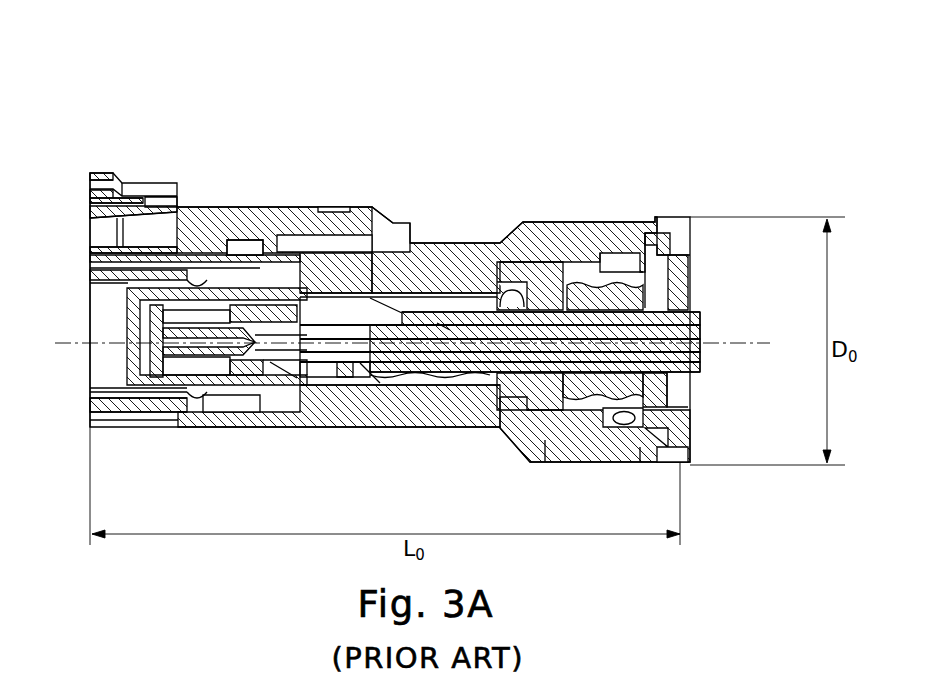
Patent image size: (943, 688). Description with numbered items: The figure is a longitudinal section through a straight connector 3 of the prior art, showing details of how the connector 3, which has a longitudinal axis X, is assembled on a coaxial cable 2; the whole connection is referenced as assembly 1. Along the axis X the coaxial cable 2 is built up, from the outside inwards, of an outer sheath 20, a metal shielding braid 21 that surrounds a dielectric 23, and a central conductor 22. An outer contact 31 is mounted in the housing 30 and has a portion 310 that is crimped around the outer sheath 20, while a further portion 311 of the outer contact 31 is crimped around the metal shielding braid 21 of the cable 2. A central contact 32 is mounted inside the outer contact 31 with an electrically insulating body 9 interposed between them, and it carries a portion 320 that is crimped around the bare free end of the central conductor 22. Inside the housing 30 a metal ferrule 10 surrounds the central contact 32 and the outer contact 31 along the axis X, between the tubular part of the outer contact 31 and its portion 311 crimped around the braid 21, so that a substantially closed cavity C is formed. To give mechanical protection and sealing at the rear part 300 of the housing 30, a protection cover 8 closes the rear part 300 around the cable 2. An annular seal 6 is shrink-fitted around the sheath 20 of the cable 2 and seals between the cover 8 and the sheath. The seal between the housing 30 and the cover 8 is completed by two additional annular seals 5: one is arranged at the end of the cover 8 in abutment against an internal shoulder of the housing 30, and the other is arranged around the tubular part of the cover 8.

The optical connector assembly 1 is at (443, 109).
The coaxial cable 2 is at (558, 367).
The connector 3 is at (203, 135).
The additional annular seals 5 is at (190, 427).
The annular seal 6 is at (582, 262).
The protection cover 8 is at (676, 235).
The electrically insulating body 9 is at (270, 250).
The metal ferrule 10 is at (318, 212).
The outer sheath 20 is at (703, 368).
The metal shielding braid 21 is at (703, 317).
The central conductor 22 is at (703, 346).
The dielectric 23 is at (786, 283).
The housing 30 is at (90, 420).
The outer contact 31 is at (123, 320).
The central contact 32 is at (310, 430).
The rear part 300 is at (627, 235).
The portion 310 is at (630, 463).
The portion 311 is at (445, 243).
The portion 320 is at (397, 430).
The cavity C is at (390, 222).
The longitudinal axis X is at (402, 341).